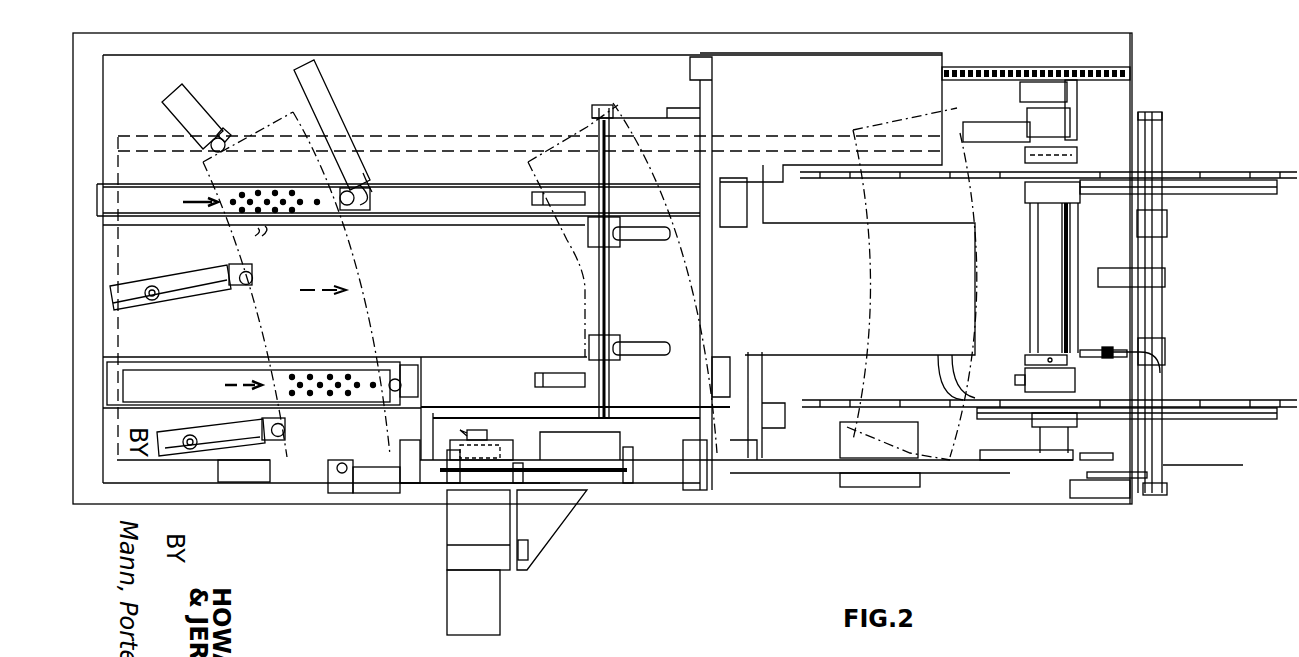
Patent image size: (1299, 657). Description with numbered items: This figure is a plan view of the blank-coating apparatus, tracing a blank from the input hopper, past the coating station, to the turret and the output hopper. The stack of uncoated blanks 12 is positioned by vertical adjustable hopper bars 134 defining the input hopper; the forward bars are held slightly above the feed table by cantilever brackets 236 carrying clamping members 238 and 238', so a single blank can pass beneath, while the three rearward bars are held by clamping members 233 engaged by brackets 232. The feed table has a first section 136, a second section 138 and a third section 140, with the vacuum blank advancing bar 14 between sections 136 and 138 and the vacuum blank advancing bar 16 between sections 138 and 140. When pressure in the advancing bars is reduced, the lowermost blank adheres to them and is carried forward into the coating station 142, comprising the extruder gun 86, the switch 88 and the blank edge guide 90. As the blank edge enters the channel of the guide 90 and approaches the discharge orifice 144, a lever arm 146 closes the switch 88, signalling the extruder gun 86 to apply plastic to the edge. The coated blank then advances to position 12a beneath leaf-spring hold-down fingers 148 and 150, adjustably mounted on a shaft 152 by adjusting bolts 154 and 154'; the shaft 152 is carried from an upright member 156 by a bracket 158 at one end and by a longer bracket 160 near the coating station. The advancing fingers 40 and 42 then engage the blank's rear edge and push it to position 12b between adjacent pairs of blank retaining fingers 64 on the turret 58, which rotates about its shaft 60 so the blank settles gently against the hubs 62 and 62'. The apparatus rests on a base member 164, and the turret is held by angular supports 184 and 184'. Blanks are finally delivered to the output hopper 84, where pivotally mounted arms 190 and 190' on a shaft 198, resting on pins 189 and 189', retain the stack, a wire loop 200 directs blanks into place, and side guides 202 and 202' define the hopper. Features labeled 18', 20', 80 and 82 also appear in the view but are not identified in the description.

The uncoated blank 12 is at (386, 270).
The blank position under hold-down fingers 12a is at (575, 272).
The blank position in turret 12b is at (865, 300).
The vacuum blank advancing bar 14 is at (398, 200).
The vacuum blank advancing bar 16 is at (201, 384).
The workpiece 18' is at (274, 247).
The workpiece 20' is at (268, 349).
The advancing finger 40 is at (530, 198).
The advancing finger 42 is at (560, 372).
The turret 58 is at (1218, 138).
The turret shaft 60 is at (1030, 280).
The hub 62 is at (1042, 426).
The hub 62' is at (946, 190).
The blank retaining fingers 64 is at (860, 180).
The frame member 80 is at (1070, 62).
The rack 82 is at (1015, 62).
The output hopper 84 is at (1195, 245).
The extruder gun 86 is at (489, 533).
The switch 88 is at (488, 440).
The blank edge guide 90 is at (452, 440).
The hopper bars 134 is at (225, 135).
The first feed table section 136 is at (484, 98).
The second feed table section 138 is at (479, 284).
The third feed table section 140 is at (535, 360).
The coating station 142 is at (428, 525).
The discharge orifice 144 is at (552, 530).
The lever arm 146 is at (473, 428).
The blank hold-down finger 148 is at (628, 248).
The blank hold-down finger 150 is at (660, 345).
The shaft 152 is at (612, 290).
The adjusting bolt 154 is at (629, 216).
The adjusting bolt 154' is at (656, 368).
The member 156 is at (730, 265).
The bracket 158 is at (632, 110).
The longer bracket 160 is at (555, 432).
The base member 164 is at (925, 504).
The angular support 184 is at (1020, 505).
The angular support 184' is at (1017, 111).
The pin 189 is at (1161, 370).
The pin 189' is at (1079, 148).
The pivotally mounted arm 190 is at (1105, 384).
The pivotally mounted arm 190' is at (1123, 261).
The shaft 198 is at (1162, 320).
The wire loop 200 is at (1090, 348).
The side guide 202 is at (1127, 436).
The side guide 202' is at (1187, 216).
The bracket 232 is at (197, 85).
The clamping member 233 is at (190, 147).
The cantilever bracket 236 is at (345, 122).
The clamping member 238 is at (420, 171).
The clamping member 238' is at (458, 384).